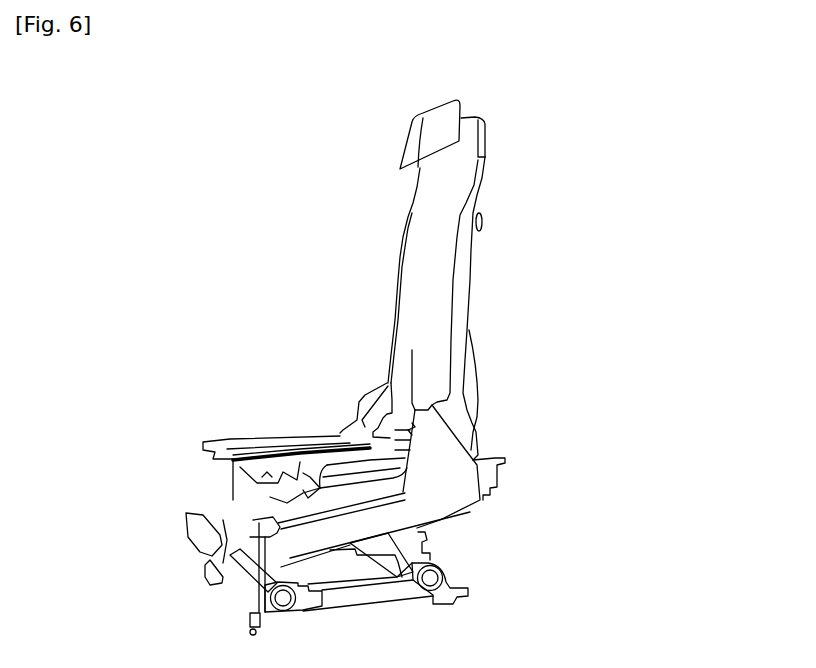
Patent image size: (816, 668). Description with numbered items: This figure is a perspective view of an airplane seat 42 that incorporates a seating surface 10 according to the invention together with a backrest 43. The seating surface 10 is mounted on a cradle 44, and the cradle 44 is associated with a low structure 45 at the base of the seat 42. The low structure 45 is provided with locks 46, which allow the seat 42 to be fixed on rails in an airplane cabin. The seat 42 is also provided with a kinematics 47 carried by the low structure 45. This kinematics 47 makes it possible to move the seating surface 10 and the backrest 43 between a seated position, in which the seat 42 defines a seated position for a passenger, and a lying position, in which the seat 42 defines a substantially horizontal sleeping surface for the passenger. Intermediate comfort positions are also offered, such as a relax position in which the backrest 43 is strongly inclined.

The airplane seat 42 is at (293, 217).
The backrest 43 is at (460, 252).
The seating surface 10 is at (303, 435).
The kinematics 47 is at (317, 487).
The low structure 45 is at (258, 516).
The cradle 44 is at (448, 468).
The locks 46 is at (247, 618).